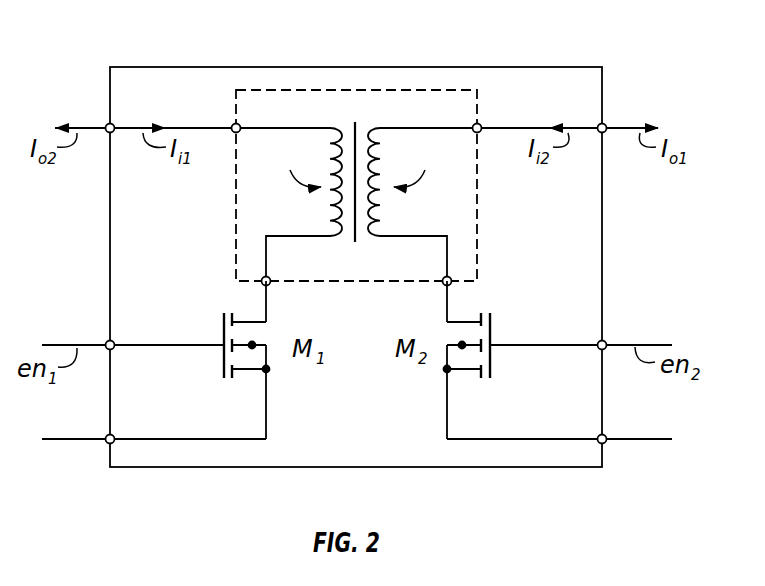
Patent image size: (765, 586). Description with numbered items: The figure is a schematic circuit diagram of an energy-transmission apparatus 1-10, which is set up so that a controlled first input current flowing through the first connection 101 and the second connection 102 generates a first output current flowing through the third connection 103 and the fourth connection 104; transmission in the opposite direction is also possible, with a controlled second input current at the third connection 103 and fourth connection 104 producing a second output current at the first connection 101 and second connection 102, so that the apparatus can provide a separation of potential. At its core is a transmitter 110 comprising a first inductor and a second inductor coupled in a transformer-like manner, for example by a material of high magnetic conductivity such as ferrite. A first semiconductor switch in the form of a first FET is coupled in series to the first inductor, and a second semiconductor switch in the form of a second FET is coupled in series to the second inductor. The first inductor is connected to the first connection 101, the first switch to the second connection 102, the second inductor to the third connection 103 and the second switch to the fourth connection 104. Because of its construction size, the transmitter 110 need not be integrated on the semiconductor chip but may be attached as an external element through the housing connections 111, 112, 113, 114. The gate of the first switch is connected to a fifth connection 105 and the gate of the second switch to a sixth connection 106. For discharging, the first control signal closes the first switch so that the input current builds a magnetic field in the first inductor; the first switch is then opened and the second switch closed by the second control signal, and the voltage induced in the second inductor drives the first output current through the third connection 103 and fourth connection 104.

The energy-transmission apparatus 1-10 is at (470, 66).
The first connection 101 is at (108, 124).
The second connection 102 is at (107, 446).
The third connection 103 is at (605, 124).
The fourth connection 104 is at (606, 444).
The fifth connection 105 is at (107, 341).
The sixth connection 106 is at (606, 341).
The transmitter 110 is at (480, 198).
The housing connection 111 is at (234, 124).
The housing connection 112 is at (263, 285).
The housing connection 113 is at (480, 124).
The housing connection 114 is at (450, 285).